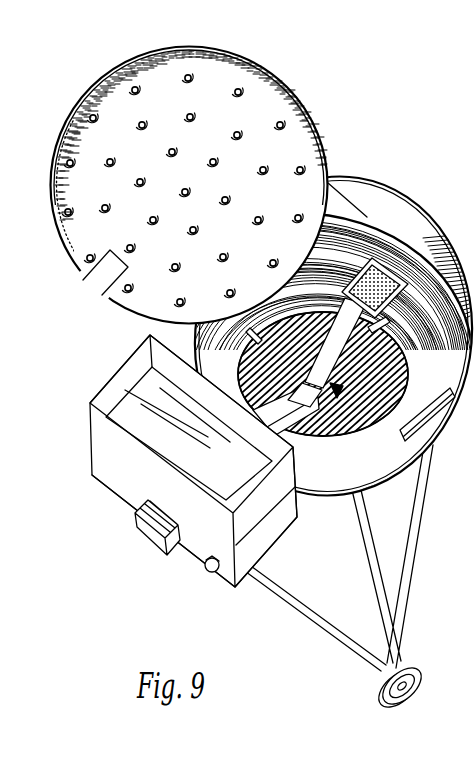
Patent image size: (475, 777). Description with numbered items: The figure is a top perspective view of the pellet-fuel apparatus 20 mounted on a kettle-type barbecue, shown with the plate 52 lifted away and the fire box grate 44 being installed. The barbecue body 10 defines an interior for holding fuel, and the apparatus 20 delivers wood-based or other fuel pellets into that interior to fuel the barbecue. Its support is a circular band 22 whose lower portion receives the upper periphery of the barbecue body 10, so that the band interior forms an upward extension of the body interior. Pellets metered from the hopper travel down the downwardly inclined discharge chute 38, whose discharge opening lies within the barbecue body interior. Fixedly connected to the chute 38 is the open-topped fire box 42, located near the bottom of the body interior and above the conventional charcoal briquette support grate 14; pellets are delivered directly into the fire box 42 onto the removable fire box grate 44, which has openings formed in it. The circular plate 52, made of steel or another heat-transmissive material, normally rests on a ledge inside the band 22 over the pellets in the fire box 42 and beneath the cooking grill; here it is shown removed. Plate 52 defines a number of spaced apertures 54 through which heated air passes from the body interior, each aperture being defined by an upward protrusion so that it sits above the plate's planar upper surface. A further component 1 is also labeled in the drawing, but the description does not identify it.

The motor housing 1 is at (105, 432).
The barbecue body 10 is at (385, 492).
The charcoal briquette support grate 14 is at (404, 358).
The apparatus 20 is at (412, 198).
The circular band 22 is at (371, 205).
The discharge chute 38 is at (253, 418).
The fire box 42 is at (320, 430).
The fire box grate 44 is at (398, 296).
The circular plate 52 is at (190, 171).
The apertures 54 is at (192, 76).